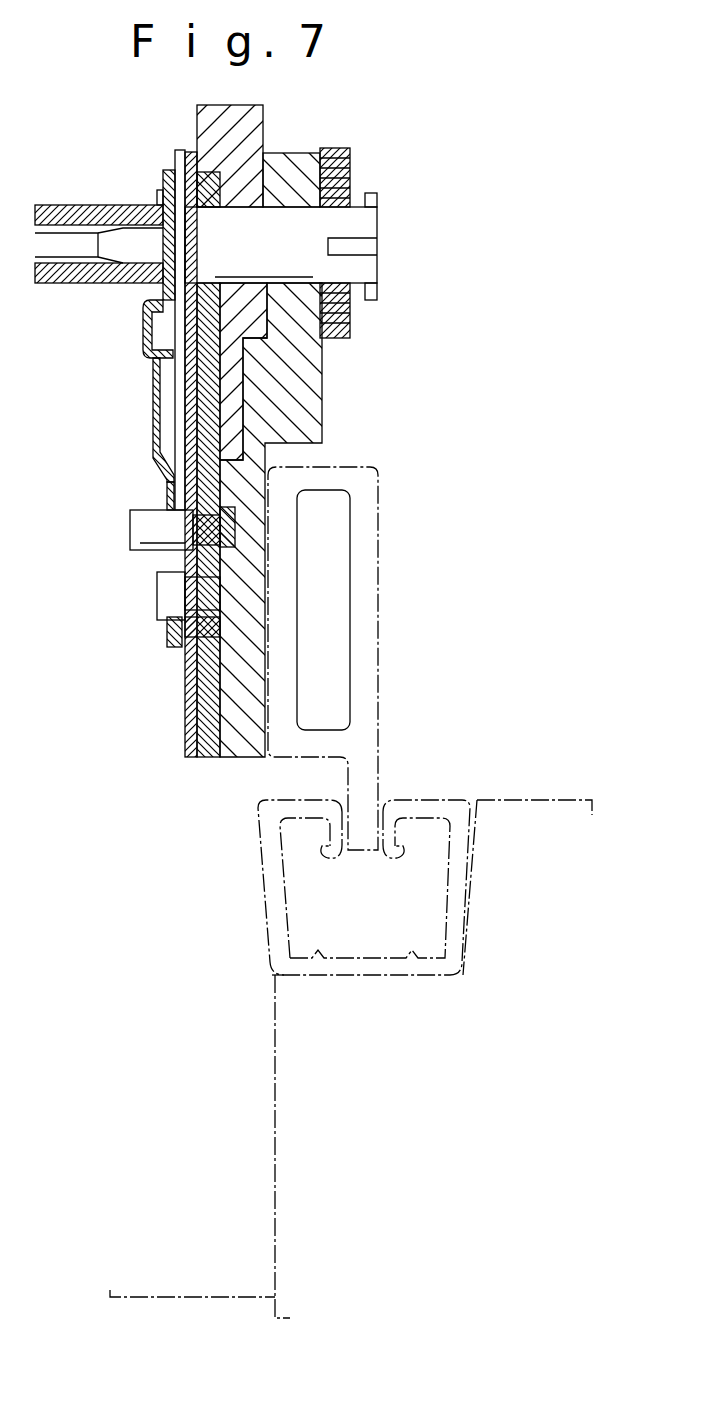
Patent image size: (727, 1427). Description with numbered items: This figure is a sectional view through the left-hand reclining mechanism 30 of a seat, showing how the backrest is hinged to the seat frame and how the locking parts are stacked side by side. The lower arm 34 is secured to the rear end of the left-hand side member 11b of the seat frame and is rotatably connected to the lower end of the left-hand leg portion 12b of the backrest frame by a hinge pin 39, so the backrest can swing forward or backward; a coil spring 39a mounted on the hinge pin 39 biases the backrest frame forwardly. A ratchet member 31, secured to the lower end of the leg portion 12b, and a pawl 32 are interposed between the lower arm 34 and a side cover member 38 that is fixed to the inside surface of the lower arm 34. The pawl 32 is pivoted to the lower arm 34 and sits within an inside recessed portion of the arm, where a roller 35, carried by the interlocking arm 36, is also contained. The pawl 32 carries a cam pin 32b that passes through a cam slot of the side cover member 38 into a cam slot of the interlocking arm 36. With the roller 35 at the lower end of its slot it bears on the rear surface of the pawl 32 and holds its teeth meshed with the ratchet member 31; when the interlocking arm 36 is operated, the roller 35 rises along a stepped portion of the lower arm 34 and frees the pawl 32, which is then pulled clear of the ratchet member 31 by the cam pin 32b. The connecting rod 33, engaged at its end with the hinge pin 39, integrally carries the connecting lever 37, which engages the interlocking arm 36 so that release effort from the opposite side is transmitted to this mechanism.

The left-hand side member 11b is at (372, 588).
The left-hand leg portion 12b is at (258, 135).
The left-hand reclining mechanism 30 is at (418, 305).
The ratchet member 31 is at (192, 434).
The pawl 32 is at (228, 542).
The cam pin 32b is at (142, 530).
The connecting rod 33 is at (96, 197).
The lower arm 34 is at (328, 419).
The roller 35 is at (228, 634).
The interlocking arm 36 is at (164, 488).
The connecting lever 37 is at (137, 332).
The side cover member 38 is at (180, 407).
The hinge pin 39 is at (385, 215).
The coil spring 39a is at (360, 163).